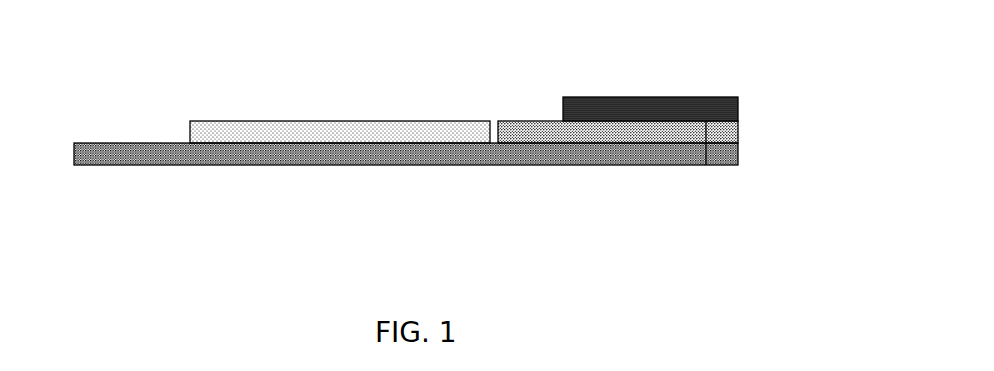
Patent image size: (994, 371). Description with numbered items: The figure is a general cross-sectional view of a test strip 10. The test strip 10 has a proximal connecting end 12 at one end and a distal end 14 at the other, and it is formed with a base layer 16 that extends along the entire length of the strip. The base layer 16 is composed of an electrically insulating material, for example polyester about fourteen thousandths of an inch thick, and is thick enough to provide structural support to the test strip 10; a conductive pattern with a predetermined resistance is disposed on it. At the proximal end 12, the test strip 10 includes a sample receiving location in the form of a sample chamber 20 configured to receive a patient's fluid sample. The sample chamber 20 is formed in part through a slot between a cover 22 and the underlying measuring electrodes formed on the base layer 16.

The test strip 10 is at (476, 84).
The proximal connecting end 12 is at (857, 115).
The distal end 14 is at (74, 152).
The base layer 16 is at (520, 157).
The sample chamber 20 is at (740, 125).
The cover 22 is at (706, 165).